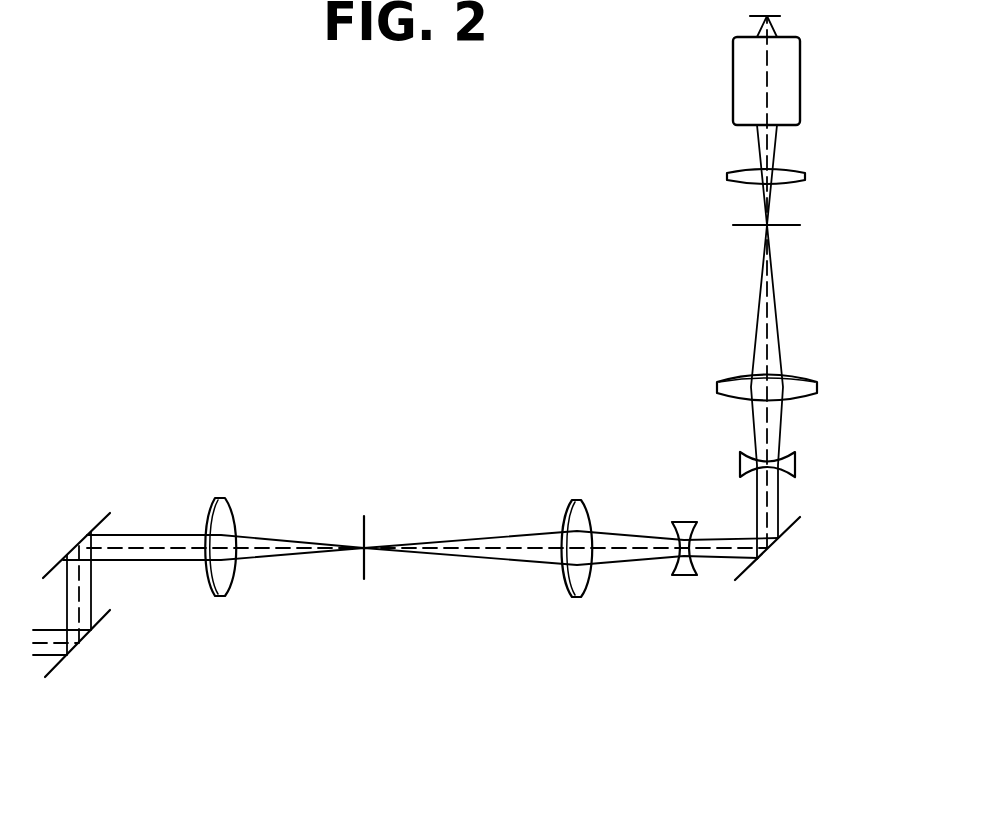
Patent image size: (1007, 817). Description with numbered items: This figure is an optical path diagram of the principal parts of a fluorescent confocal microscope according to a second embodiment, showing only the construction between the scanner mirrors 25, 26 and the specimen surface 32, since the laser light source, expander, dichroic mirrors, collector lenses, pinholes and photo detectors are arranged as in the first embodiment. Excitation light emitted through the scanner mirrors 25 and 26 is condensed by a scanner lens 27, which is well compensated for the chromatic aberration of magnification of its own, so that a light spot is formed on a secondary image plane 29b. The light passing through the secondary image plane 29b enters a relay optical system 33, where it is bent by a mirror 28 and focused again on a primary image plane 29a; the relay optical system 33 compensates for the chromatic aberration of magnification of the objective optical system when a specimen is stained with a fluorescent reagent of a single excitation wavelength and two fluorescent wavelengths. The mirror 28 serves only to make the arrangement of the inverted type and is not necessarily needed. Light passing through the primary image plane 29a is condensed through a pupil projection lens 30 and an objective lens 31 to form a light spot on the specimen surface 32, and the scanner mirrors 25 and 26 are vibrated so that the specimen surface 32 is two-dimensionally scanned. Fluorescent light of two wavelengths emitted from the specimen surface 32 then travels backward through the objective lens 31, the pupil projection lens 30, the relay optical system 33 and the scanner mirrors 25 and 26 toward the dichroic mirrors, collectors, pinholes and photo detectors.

The scanner mirror 25 is at (103, 623).
The scanner mirror 26 is at (87, 532).
The scanner lens 27 is at (222, 498).
The mirror 28 is at (793, 527).
The primary image plane 29a is at (800, 225).
The secondary image plane 29b is at (364, 579).
The pupil projection lens 30 is at (805, 176).
The objective lens 31 is at (800, 80).
The specimen surface 32 is at (780, 16).
The relay optical system 33 is at (713, 360).